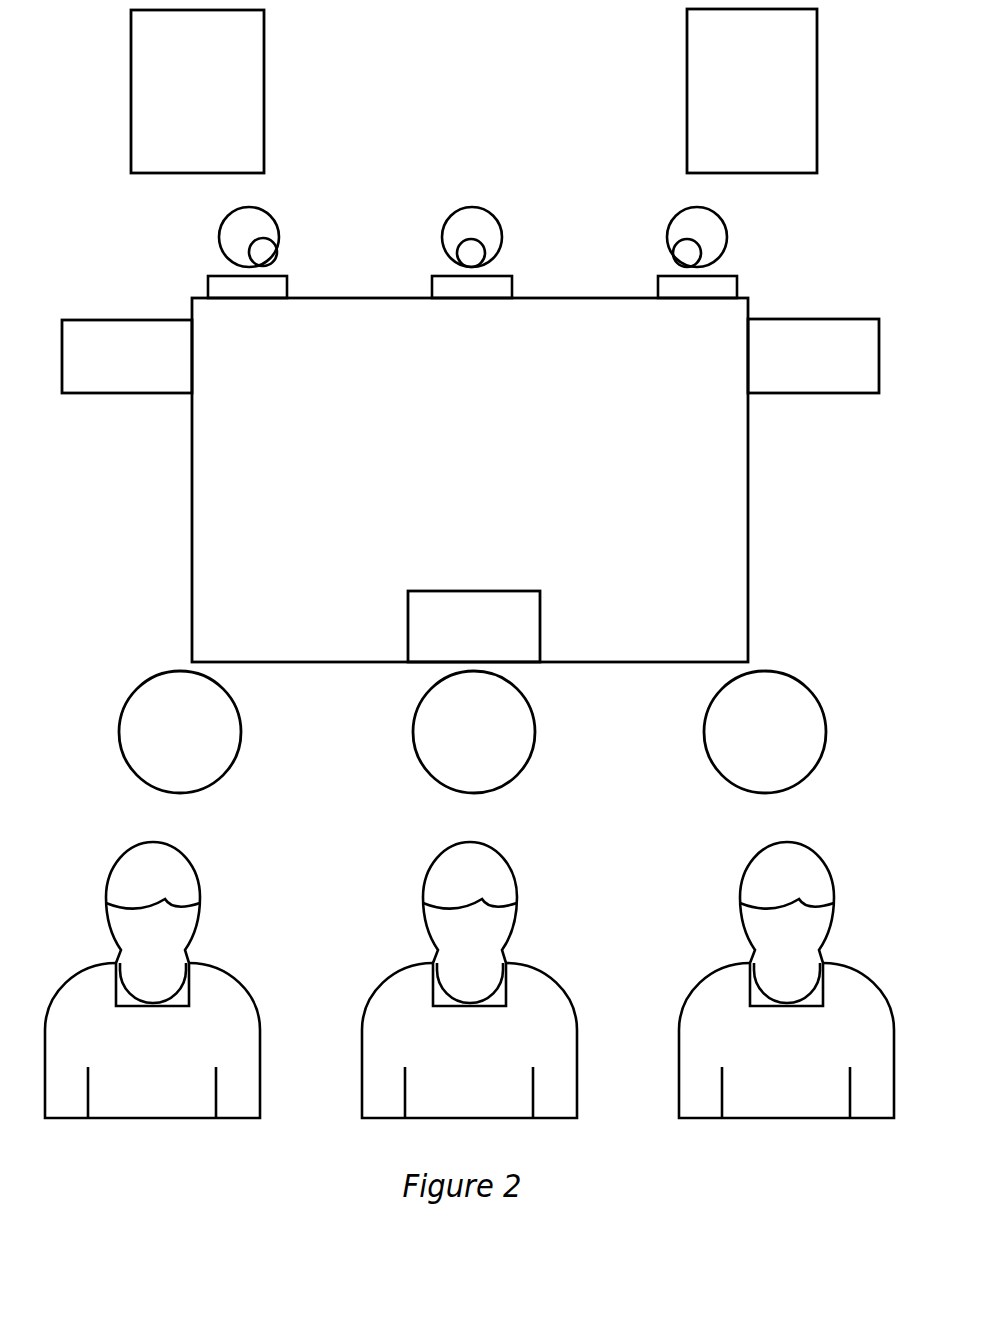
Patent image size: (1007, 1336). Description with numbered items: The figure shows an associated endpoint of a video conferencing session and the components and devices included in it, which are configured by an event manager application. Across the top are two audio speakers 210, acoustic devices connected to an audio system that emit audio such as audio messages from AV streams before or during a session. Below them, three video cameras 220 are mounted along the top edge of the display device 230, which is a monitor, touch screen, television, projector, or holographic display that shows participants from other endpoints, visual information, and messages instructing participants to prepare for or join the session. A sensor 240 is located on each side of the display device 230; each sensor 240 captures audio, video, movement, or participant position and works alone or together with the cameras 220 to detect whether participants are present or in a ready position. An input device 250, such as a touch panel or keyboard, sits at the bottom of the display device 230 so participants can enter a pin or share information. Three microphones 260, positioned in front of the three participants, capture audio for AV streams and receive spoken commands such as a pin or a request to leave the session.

The audio speaker 210 is at (178, 128).
The video camera 220 is at (230, 236).
The display device 230 is at (452, 358).
The sensor 240 is at (108, 380).
The input device 250 is at (455, 650).
The microphone 260 is at (161, 756).